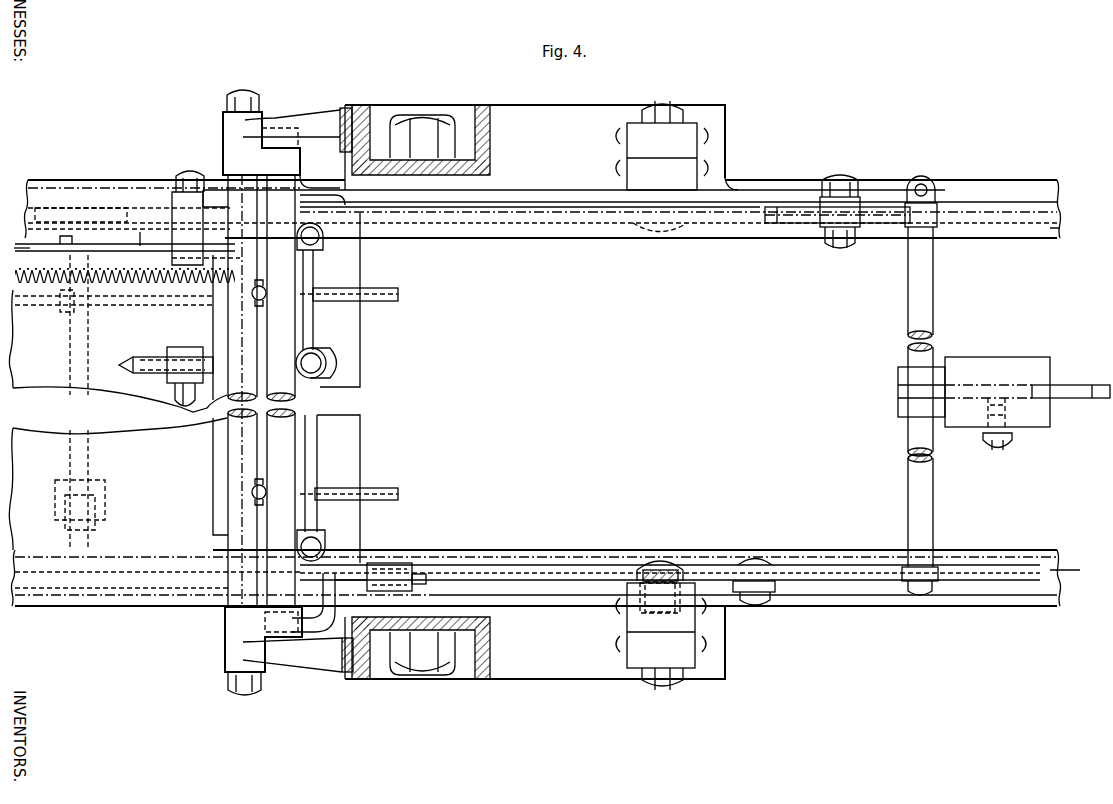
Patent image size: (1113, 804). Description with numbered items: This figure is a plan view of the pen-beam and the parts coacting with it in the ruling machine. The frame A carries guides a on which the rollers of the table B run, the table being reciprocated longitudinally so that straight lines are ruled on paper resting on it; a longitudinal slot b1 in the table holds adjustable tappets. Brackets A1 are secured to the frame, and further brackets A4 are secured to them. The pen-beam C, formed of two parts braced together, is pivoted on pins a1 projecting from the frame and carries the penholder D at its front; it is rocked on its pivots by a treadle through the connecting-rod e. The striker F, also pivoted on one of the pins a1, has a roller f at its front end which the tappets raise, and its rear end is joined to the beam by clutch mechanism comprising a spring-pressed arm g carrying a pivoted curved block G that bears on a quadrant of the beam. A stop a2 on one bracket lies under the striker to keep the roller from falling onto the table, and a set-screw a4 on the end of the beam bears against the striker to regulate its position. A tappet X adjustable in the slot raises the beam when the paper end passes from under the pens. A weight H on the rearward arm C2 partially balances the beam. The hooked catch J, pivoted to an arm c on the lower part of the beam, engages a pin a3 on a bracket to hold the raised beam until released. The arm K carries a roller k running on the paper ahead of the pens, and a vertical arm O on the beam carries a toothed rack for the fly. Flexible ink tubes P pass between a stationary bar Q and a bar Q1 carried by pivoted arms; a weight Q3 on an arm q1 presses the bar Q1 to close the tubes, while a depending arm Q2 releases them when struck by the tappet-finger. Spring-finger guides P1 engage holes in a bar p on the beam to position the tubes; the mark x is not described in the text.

The frame A is at (1018, 233).
The guides a is at (1070, 399).
The brackets A1 is at (483, 133).
The brackets A4 is at (343, 108).
The pins a1 is at (662, 395).
The stop a2 is at (388, 192).
The pin a3 is at (351, 588).
The set-screw a4 is at (933, 183).
The table B is at (122, 402).
The longitudinal slot b1 is at (15, 244).
The pen-beam C is at (408, 210).
The arm C2 is at (1067, 398).
The arm c is at (640, 586).
The penholder D is at (213, 326).
The connecting-rod e is at (740, 595).
The striker F is at (218, 195).
The roller f is at (175, 220).
The curved block G is at (785, 223).
The spring-pressed arm g is at (826, 240).
The weight H is at (960, 418).
The hooked catch J is at (547, 603).
The arm K is at (163, 357).
The roller k is at (133, 366).
The vertical arm O is at (655, 558).
The flexible tubes P is at (252, 294).
The guides P1 is at (385, 301).
The bar p is at (323, 246).
The stationary bar Q is at (281, 348).
The bar Q1 is at (313, 391).
The depending arm Q2 is at (225, 628).
The weight Q3 is at (390, 563).
The arm q1 is at (334, 582).
The tappet X is at (139, 230).
The mark x is at (125, 283).